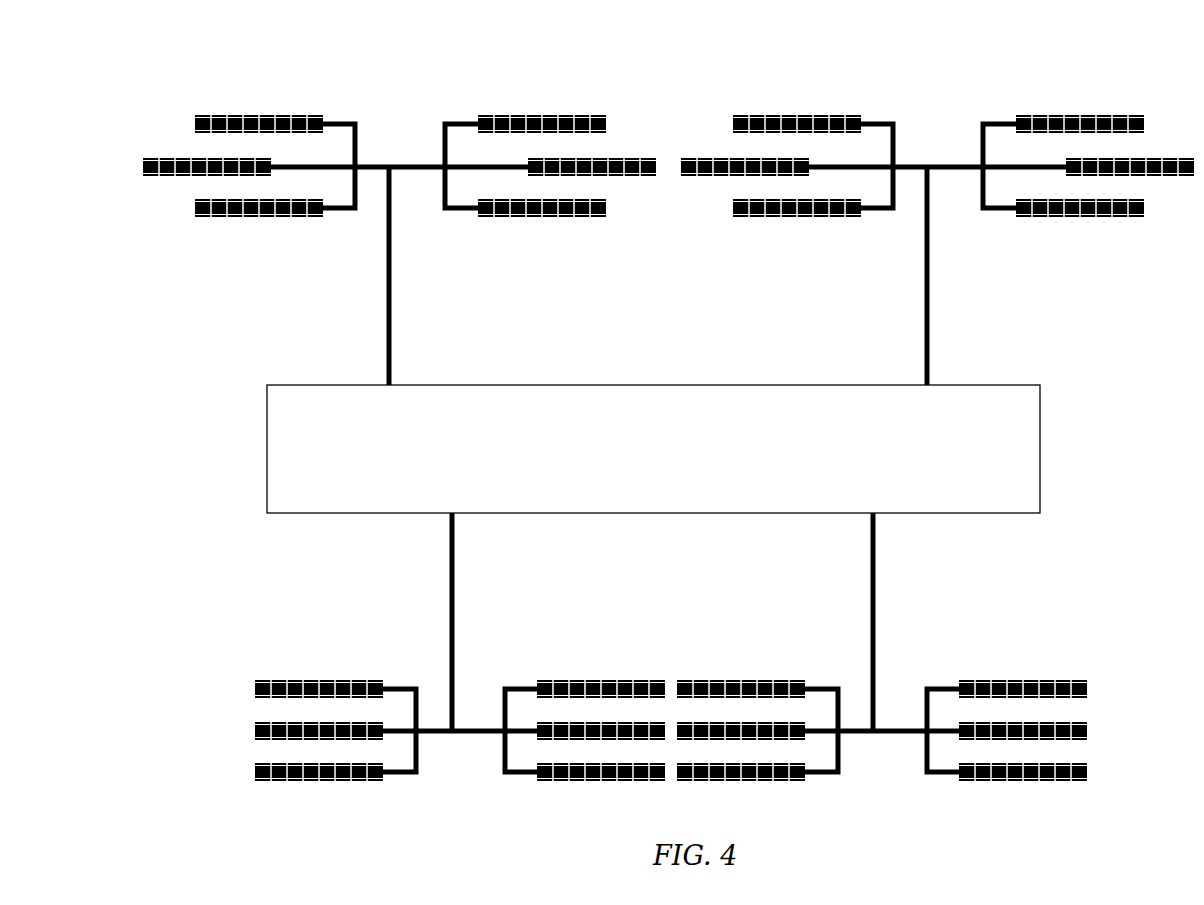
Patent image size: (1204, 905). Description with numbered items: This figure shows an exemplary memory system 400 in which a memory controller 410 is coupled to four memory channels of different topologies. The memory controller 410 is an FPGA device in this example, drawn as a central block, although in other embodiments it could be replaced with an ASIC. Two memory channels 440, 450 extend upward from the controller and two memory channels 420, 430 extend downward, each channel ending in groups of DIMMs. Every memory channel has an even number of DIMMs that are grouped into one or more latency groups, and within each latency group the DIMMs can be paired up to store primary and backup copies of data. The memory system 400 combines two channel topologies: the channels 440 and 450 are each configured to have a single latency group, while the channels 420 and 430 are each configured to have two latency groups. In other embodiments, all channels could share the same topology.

The memory system 400 is at (907, 49).
The memory controller 410 is at (697, 457).
The memory channel 420 is at (470, 639).
The memory channel 430 is at (895, 624).
The memory channel 440 is at (402, 244).
The memory channel 450 is at (953, 260).